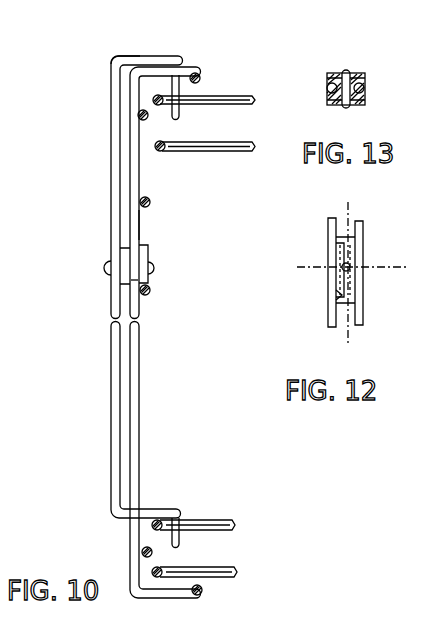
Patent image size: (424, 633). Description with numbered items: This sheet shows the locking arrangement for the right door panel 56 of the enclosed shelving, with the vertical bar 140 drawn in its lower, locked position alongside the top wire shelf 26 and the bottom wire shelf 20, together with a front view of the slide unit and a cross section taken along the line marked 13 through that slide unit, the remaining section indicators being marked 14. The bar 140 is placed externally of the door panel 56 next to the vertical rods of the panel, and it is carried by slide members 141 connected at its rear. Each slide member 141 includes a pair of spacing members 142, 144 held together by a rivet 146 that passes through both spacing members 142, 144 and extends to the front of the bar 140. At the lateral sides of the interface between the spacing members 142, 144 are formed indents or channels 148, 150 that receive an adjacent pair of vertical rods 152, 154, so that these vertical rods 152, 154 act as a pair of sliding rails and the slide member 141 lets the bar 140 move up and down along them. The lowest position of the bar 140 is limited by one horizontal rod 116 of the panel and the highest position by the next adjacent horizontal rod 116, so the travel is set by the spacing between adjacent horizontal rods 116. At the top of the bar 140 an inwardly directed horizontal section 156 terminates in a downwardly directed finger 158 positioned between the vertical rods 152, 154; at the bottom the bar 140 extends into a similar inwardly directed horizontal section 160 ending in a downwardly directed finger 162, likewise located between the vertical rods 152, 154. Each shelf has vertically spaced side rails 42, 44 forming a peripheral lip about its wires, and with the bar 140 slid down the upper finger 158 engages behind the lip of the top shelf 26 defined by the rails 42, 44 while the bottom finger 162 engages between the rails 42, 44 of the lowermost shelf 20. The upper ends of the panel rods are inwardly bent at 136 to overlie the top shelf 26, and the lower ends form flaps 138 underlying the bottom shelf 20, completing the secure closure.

In FIG. 12, the section line 13— 13 is at (302, 264).
In FIG. 12, the corner post 14 is at (349, 205).
In FIG. 10, the lower or bottom wire shelf 20 is at (243, 577).
In FIG. 10, the top wire shelf 26 is at (263, 150).
In FIG. 10, the side rail section 42 is at (247, 144).
In FIG. 10, the side rail section 44 is at (225, 97).
In FIG. 10, the right door panel 56 is at (111, 361).
In FIG. 10, the horizontal rod 116 is at (147, 117).
In FIG. 10, the inwardly bent upper end (flap) 136 is at (196, 65).
In FIG. 10, the flap 138 is at (193, 604).
In FIG. 10, the vertical bar 140 is at (111, 172).
In FIG. 12, the vertical bar 140 is at (338, 300).
In FIG. 10, the slide member 141 is at (157, 276).
In FIG. 13, the slide member 141 is at (353, 63).
In FIG. 12, the slide member 141 is at (362, 278).
In FIG. 10, the spacing member 142 is at (149, 250).
In FIG. 13, the spacing member 142 is at (361, 78).
In FIG. 10, the spacing member 144 is at (130, 278).
In FIG. 13, the spacing member 144 is at (356, 107).
In FIG. 10, the rivet 146 is at (107, 275).
In FIG. 13, the rivet 146 is at (334, 75).
In FIG. 12, the rivet 146 is at (343, 270).
In FIG. 13, the indent or channel 148 is at (331, 100).
In FIG. 13, the indent or channel 150 is at (362, 92).
In FIG. 13, the vertical rod 152 is at (328, 86).
In FIG. 12, the vertical rod 152 is at (330, 218).
In FIG. 10, the vertical rod 154 is at (138, 230).
In FIG. 13, the vertical rod 154 is at (365, 87).
In FIG. 12, the vertical rod 154 is at (360, 221).
In FIG. 10, the inwardly directed horizontal section 156 is at (143, 57).
In FIG. 10, the downwardly directed finger 158 is at (177, 108).
In FIG. 10, the inwardly directed horizontal section 160 is at (176, 519).
In FIG. 10, the downwardly directed finger 162 is at (179, 538).